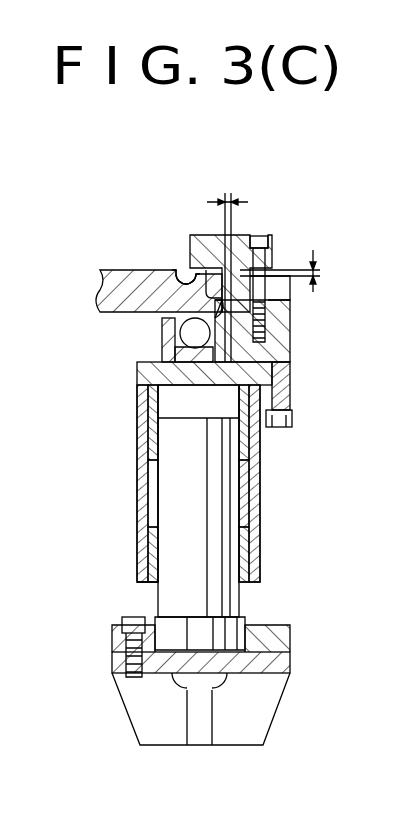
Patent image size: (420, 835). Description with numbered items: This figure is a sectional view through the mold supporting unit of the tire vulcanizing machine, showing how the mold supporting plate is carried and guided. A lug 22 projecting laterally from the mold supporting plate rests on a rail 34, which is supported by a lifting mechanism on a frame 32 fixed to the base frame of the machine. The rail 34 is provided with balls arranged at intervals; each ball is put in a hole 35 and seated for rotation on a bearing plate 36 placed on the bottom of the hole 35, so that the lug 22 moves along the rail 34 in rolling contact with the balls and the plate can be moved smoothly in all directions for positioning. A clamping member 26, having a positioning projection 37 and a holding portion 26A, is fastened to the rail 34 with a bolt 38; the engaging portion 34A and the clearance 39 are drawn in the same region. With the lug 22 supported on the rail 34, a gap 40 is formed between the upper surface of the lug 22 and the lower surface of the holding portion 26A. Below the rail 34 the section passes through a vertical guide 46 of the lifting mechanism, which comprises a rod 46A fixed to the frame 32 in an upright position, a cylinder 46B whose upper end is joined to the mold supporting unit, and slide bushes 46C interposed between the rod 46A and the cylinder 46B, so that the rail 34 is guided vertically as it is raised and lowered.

The lug 22 is at (102, 283).
The clamping member 26 is at (277, 246).
The holding portion 26A is at (177, 283).
The frame 32 is at (258, 713).
The rail 34 is at (274, 338).
The engaging portion 34A is at (272, 320).
The hole 35 is at (165, 336).
The bearing plate 36 is at (293, 384).
The positioning projection 37 is at (270, 292).
The bolt 38 is at (259, 231).
The clearance 39 is at (233, 198).
The gap 40 is at (317, 272).
The vertical guide 46 is at (137, 486).
The rod 46A is at (230, 598).
The cylinder 46B is at (260, 463).
The slide bush 46C is at (138, 395).